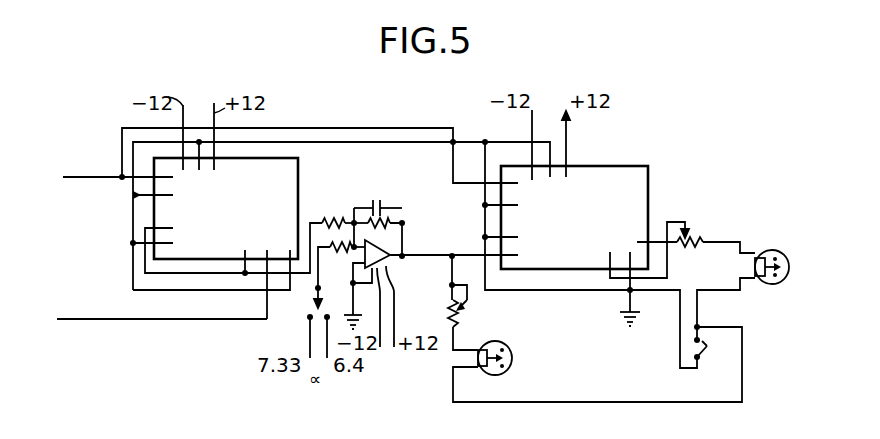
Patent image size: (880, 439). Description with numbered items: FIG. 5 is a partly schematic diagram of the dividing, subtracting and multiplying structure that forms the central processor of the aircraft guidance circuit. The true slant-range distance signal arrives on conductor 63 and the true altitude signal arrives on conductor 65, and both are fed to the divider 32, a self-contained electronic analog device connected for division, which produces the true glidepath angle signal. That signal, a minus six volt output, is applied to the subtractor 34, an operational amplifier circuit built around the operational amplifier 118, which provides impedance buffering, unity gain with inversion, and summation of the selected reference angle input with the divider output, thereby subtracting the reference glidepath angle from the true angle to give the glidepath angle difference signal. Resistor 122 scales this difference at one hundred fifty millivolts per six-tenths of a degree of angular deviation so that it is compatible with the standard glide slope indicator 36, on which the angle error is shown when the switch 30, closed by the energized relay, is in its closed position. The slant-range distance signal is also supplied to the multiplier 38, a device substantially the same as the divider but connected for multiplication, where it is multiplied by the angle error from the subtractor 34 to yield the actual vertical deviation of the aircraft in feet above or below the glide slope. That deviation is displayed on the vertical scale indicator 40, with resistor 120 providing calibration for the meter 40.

The conductor 63 is at (90, 176).
The conductor 65 is at (167, 320).
The divider 32 is at (148, 213).
The subtractor 34 is at (389, 207).
The operational amplifier 118 is at (375, 262).
The resistor 122 is at (450, 305).
The indicator 36 is at (514, 358).
The multiplier 38 is at (618, 165).
The resistor 120 is at (683, 246).
The indicator 40 is at (766, 250).
The switch 30 is at (717, 360).